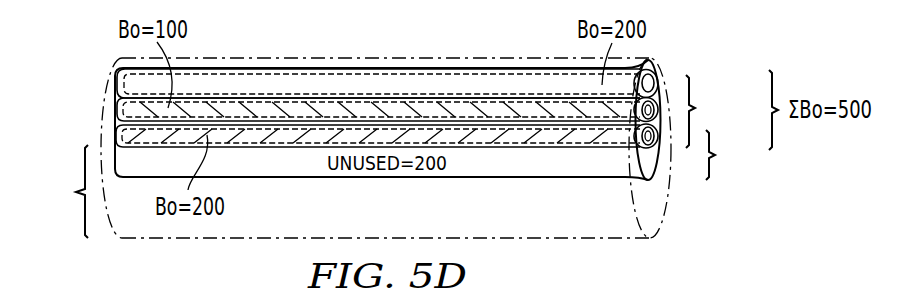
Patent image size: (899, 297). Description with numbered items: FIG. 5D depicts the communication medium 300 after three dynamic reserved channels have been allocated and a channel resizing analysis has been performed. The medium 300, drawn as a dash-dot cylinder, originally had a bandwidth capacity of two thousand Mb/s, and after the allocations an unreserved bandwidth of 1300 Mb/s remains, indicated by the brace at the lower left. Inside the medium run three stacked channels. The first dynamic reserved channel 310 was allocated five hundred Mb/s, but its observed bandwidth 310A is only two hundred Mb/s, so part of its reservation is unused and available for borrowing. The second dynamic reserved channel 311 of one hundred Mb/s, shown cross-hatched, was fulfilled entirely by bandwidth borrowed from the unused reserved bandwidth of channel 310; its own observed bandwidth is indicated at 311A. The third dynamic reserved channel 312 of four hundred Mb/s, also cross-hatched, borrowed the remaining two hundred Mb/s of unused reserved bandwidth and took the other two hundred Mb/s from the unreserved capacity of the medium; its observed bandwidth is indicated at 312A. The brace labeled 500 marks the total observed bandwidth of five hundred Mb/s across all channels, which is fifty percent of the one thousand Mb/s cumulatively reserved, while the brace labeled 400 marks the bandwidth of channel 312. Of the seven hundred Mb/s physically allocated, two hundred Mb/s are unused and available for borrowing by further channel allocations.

The communication medium 300 is at (580, 240).
The dynamic reserved channel 310 is at (430, 67).
The observed bandwidth 310A is at (510, 75).
The dynamic reserved channel 311 is at (365, 100).
The second fiber tube inner sheath 311A is at (275, 105).
The dynamic reserved channel 312 is at (480, 178).
The third fiber tube 312A is at (557, 147).
The total used bandwidth 500 is at (712, 111).
The lower bandwidth portion 400 is at (732, 155).
The total cable capacity 1300 is at (55, 191).